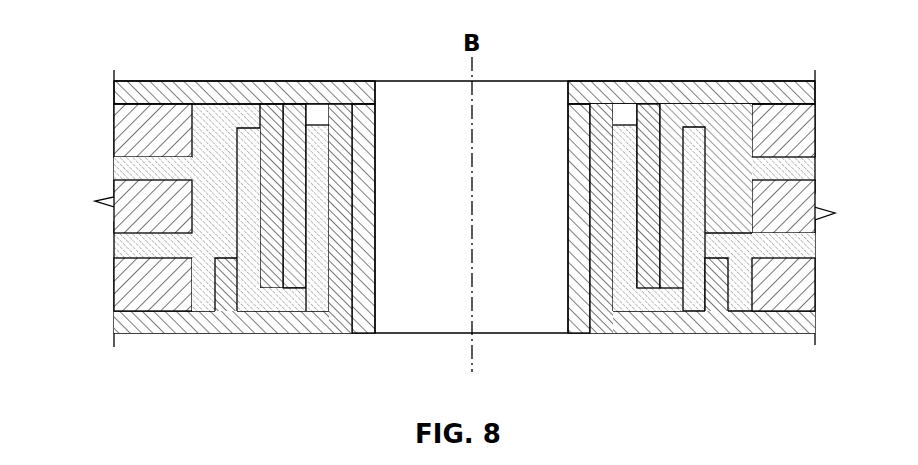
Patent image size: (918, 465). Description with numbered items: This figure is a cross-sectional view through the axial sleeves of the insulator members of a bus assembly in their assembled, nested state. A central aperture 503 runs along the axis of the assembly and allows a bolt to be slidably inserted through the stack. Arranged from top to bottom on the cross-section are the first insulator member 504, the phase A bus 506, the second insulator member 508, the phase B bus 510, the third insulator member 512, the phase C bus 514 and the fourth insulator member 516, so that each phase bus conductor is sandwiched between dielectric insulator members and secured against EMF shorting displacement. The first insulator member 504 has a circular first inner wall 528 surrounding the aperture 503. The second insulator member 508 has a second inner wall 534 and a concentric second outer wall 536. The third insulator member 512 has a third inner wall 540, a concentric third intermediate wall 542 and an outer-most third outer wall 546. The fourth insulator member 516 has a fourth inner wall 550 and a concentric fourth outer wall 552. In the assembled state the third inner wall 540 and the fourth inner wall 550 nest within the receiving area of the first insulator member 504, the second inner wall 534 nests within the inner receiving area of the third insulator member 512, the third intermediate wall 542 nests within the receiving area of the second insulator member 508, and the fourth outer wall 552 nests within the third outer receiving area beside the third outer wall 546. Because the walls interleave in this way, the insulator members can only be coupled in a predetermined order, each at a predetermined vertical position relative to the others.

The aperture 503 is at (503, 120).
The first phase insulator member 504 is at (127, 97).
The phase A bus 506 is at (127, 133).
The second phase insulator member 508 is at (113, 178).
The phase B bus 510 is at (125, 218).
The third phase insulator member 512 is at (805, 248).
The phase C bus 514 is at (128, 282).
The fourth phase insulator member 516 is at (805, 325).
The first inner wall 528 is at (293, 273).
The second inner wall 534 is at (268, 278).
The second outer wall 536 is at (720, 170).
The third inner wall 540 is at (627, 132).
The third intermediate wall 542 is at (252, 128).
The third outer wall 546 is at (203, 303).
The fourth inner wall 550 is at (605, 113).
The fourth outer wall 552 is at (715, 302).